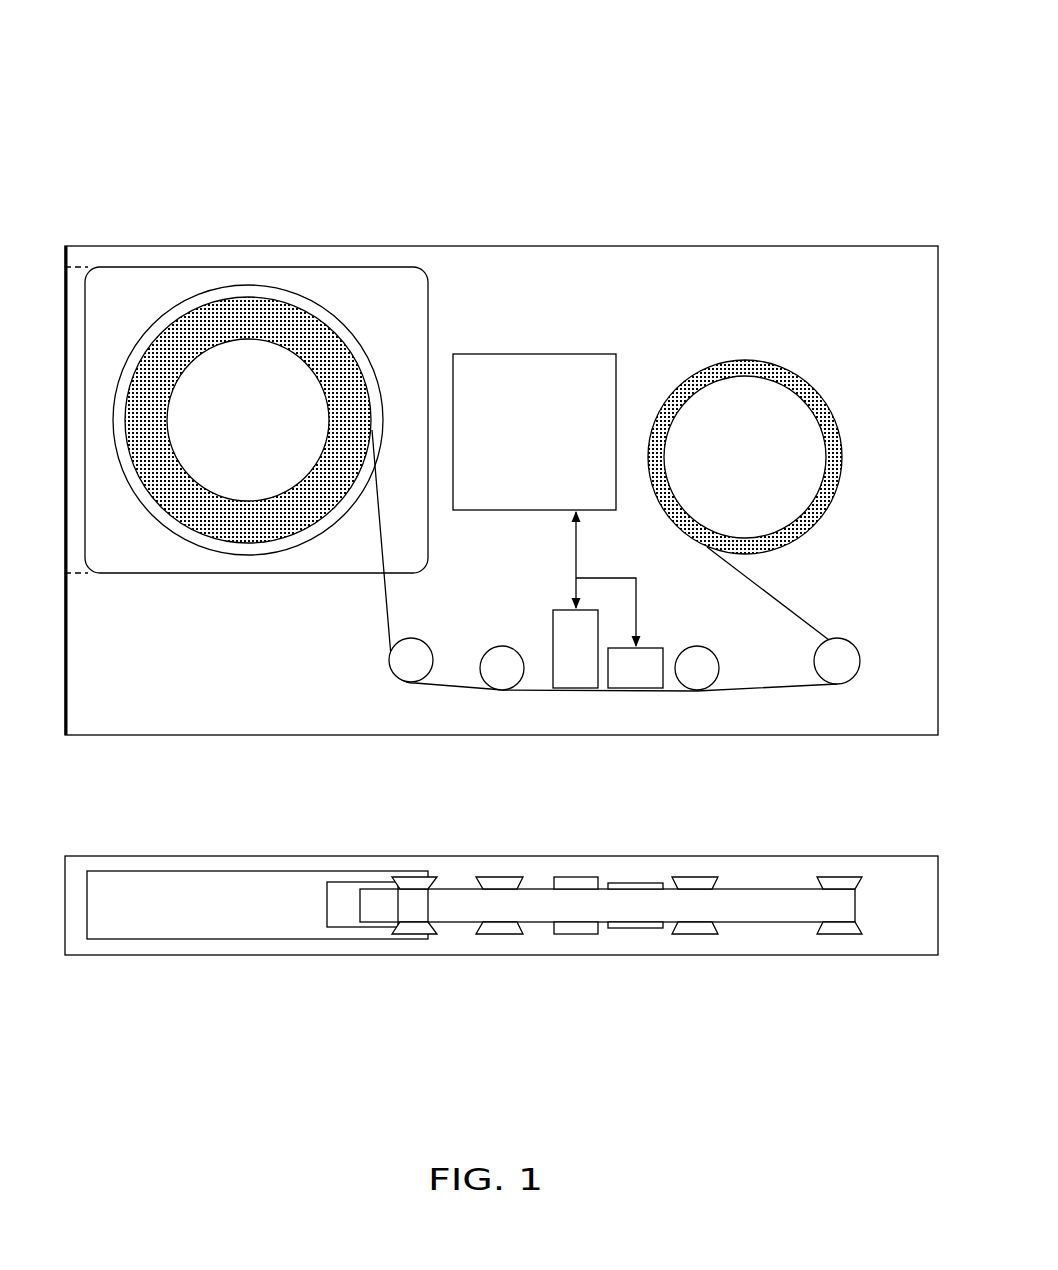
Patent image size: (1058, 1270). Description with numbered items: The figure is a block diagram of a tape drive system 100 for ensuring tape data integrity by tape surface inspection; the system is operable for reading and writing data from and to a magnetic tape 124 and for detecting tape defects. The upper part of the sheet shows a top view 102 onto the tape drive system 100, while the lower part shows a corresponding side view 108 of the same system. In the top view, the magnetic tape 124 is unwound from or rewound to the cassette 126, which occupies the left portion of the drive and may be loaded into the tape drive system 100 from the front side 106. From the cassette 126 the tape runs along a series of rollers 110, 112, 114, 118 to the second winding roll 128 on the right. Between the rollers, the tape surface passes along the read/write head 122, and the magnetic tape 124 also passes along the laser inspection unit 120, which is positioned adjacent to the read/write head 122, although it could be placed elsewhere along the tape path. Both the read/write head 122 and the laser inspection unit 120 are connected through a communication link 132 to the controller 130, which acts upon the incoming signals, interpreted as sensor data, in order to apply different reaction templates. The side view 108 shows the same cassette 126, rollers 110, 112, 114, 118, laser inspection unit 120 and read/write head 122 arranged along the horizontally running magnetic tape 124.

The tape drive system 100 is at (240, 100).
The top view 102 is at (780, 182).
The front side 106 is at (62, 235).
The side view 108 is at (913, 963).
The roller 110 is at (408, 662).
The roller 112 is at (503, 670).
The roller 114 is at (695, 665).
The roller 118 is at (837, 663).
The laser inspection unit 120 is at (568, 662).
The read/write head 122 is at (632, 677).
The magnetic tape 124 is at (368, 1030).
The cassette 126 is at (398, 266).
The second winding roll 128 is at (755, 312).
The controller 130 is at (534, 432).
The communication link 132 is at (572, 553).